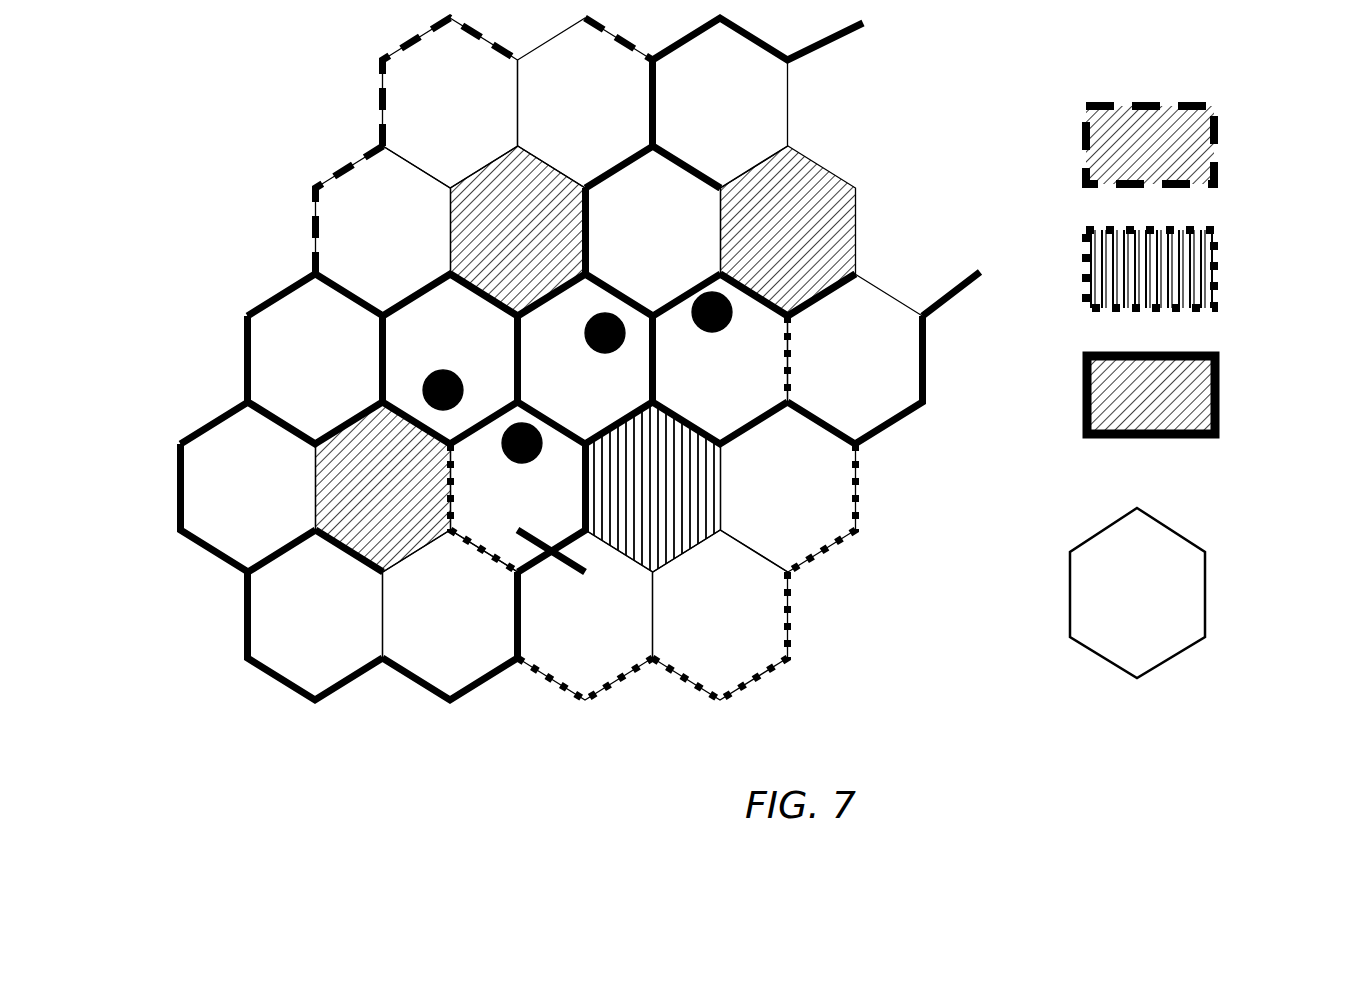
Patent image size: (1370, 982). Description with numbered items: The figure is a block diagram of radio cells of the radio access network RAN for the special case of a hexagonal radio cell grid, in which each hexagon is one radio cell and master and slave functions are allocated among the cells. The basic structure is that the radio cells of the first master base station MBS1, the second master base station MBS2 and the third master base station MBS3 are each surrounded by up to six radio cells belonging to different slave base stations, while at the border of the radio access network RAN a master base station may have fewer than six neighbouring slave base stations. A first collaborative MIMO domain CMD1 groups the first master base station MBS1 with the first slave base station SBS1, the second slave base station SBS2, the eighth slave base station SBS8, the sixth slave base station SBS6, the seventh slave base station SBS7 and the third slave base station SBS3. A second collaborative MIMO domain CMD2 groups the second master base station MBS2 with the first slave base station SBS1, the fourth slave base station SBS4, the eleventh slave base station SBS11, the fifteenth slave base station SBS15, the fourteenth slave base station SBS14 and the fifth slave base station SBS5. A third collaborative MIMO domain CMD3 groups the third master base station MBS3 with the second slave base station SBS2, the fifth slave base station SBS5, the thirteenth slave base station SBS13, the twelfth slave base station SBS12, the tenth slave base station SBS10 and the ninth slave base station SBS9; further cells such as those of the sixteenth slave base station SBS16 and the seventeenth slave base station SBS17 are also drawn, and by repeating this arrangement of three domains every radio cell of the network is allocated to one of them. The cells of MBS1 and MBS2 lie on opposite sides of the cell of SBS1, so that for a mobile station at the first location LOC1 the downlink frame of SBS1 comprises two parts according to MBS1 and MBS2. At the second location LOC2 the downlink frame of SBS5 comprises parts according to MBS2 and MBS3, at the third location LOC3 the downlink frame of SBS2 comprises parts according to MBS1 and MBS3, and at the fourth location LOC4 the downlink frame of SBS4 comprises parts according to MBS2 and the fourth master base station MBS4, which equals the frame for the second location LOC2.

The radio access network RAN is at (262, 112).
The first slave base station SBS1 is at (585, 359).
The second slave base station SBS2 is at (450, 359).
The third slave base station SBS3 is at (653, 231).
The fourth slave base station SBS4 is at (720, 359).
The fifth slave base station SBS5 is at (518, 487).
The sixth slave base station SBS6 is at (450, 103).
The seventh slave base station SBS7 is at (585, 103).
The eighth slave base station SBS8 is at (383, 231).
The ninth slave base station SBS9 is at (315, 359).
The tenth slave base station SBS10 is at (248, 487).
The eleventh slave base station SBS11 is at (788, 487).
The twelfth slave base station SBS12 is at (315, 615).
The thirteenth slave base station SBS13 is at (450, 615).
The fourteenth slave base station SBS14 is at (585, 615).
The fifteenth slave base station SBS15 is at (720, 615).
The small base station 16 SBS16 is at (855, 359).
The small base station 17 SBS17 is at (720, 103).
The first master base station MBS1 is at (543, 227).
The second master base station MBS2 is at (677, 525).
The third master base station MBS3 is at (358, 458).
The fourth master base station MBS4 is at (782, 215).
The first location LOC1 is at (630, 337).
The second location LOC2 is at (520, 445).
The third location LOC3 is at (440, 400).
The fourth location LOC4 is at (712, 312).
The first collaborative MIMO domain CMD1 is at (1213, 152).
The second collaborative MIMO domain CMD2 is at (1215, 272).
The third collaborative MIMO domain CMD3 is at (1220, 396).
The element radio cell is at (1196, 596).